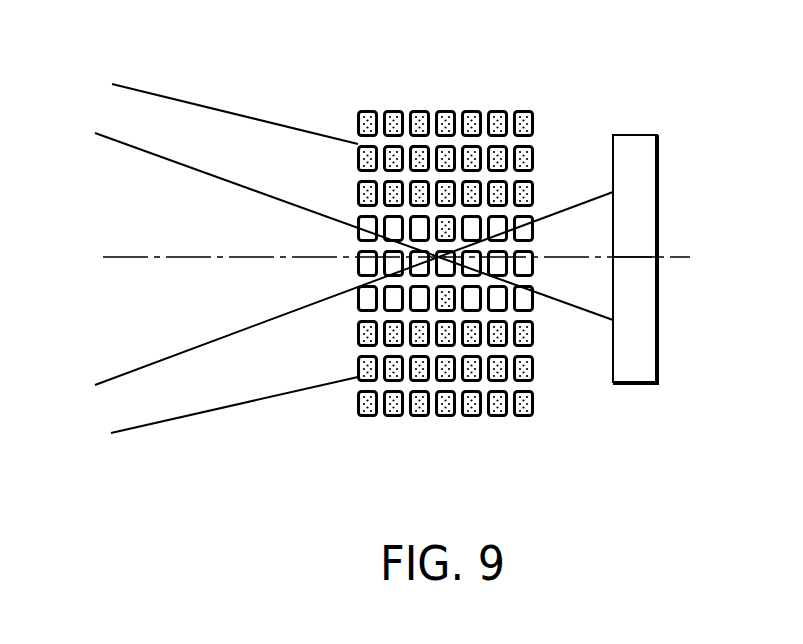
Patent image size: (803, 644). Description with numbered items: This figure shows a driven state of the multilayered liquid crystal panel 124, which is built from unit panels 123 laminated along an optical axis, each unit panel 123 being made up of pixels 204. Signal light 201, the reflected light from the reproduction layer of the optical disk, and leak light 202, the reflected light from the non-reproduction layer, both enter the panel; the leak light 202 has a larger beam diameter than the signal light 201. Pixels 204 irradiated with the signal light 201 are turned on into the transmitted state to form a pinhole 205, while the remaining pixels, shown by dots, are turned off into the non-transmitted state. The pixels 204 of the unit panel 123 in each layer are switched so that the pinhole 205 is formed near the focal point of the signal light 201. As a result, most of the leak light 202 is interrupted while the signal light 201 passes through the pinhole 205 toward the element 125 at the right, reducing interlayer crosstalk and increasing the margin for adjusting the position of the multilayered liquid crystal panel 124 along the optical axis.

The unit panel 123 is at (472, 108).
The multilayered liquid crystal panel 124 is at (430, 425).
The image sensor 125 is at (635, 134).
The signal light 201 is at (120, 143).
The leak light 202 is at (170, 97).
The pixel 204 is at (369, 108).
The pinhole 205 is at (445, 255).